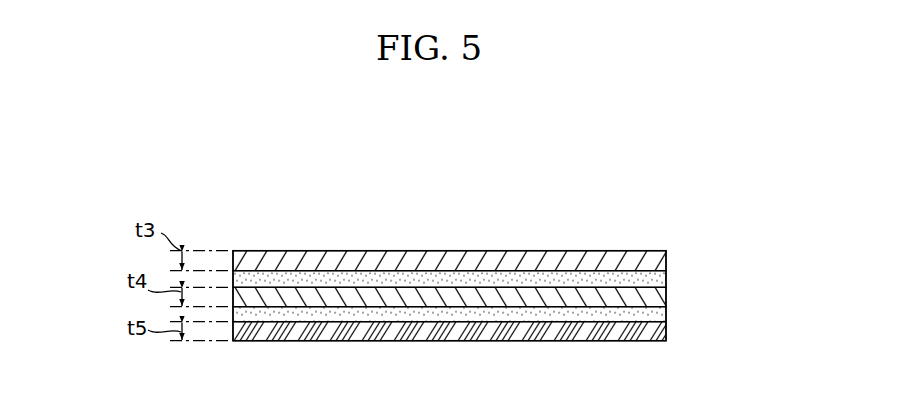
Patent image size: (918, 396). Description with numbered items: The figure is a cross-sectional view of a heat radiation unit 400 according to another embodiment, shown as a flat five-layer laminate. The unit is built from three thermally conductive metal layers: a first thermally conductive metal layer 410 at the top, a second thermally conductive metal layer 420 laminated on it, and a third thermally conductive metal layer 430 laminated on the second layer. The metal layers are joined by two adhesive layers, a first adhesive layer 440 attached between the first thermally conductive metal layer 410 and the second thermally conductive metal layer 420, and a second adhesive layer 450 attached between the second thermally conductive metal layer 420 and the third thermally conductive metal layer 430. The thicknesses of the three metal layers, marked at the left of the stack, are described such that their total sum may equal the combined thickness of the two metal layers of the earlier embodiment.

The heat radiation unit 400 is at (658, 211).
The first thermally conductive metal layer 410 is at (660, 258).
The first adhesive layer 440 is at (660, 277).
The second thermally conductive metal layer 420 is at (660, 295).
The second adhesive layer 450 is at (660, 316).
The third thermally conductive metal layer 430 is at (660, 333).